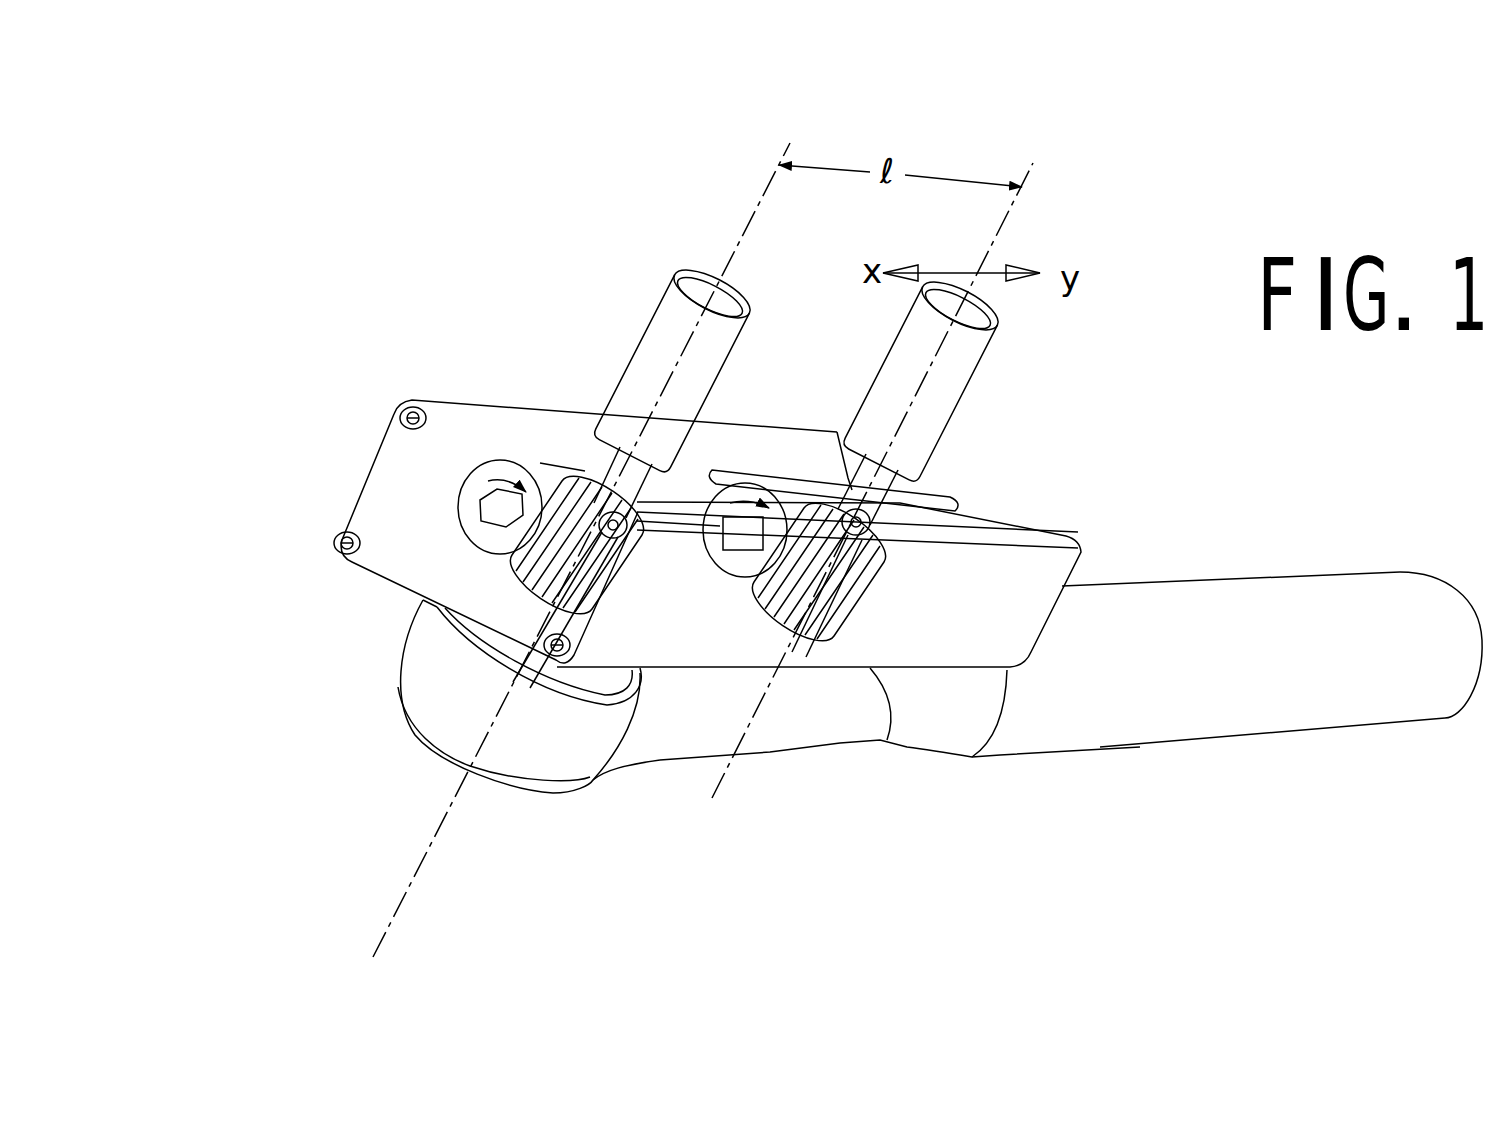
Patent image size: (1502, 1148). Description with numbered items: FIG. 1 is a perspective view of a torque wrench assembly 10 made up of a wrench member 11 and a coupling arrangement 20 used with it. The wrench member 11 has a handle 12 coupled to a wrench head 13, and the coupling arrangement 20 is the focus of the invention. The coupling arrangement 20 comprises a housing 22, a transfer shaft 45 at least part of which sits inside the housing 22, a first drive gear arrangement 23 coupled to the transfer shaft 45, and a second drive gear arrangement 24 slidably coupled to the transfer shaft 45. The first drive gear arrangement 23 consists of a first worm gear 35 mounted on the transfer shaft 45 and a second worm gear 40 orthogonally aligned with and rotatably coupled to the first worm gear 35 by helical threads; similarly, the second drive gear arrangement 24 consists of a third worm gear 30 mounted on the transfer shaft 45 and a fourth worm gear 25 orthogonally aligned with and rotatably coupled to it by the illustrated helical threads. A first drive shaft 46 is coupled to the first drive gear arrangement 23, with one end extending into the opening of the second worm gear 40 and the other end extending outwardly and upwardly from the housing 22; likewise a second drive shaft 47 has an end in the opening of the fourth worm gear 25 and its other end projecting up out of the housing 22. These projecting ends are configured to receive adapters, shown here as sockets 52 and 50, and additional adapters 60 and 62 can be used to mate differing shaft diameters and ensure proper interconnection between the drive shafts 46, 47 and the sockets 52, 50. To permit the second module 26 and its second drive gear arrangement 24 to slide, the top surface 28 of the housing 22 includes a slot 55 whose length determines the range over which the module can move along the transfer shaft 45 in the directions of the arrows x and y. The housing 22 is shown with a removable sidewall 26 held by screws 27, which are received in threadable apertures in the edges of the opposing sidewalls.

The torque wrench assembly 10 is at (1128, 495).
The wrench member 11 is at (1183, 657).
The handle 12 is at (1388, 645).
The wrench head 13 is at (467, 700).
The coupling arrangement 20 is at (370, 510).
The housing 22 is at (1030, 588).
The first drive gear arrangement 23 is at (445, 502).
The second drive gear arrangement 24 is at (878, 593).
The fourth worm gear 25 is at (847, 613).
The sidewall 26 is at (400, 460).
The screws 27 is at (398, 408).
The top surface 28 is at (708, 444).
The third worm gear 30 is at (728, 580).
The first worm gear 35 is at (473, 540).
The second worm gear 40 is at (527, 577).
The transfer shaft 45 is at (652, 545).
The first drive shaft 46 is at (588, 495).
The second drive shaft 47 is at (846, 442).
The socket 50 is at (930, 407).
The socket 52 is at (663, 342).
The slot 55 is at (950, 490).
The adapter 60 is at (607, 490).
The adapter 62 is at (880, 496).